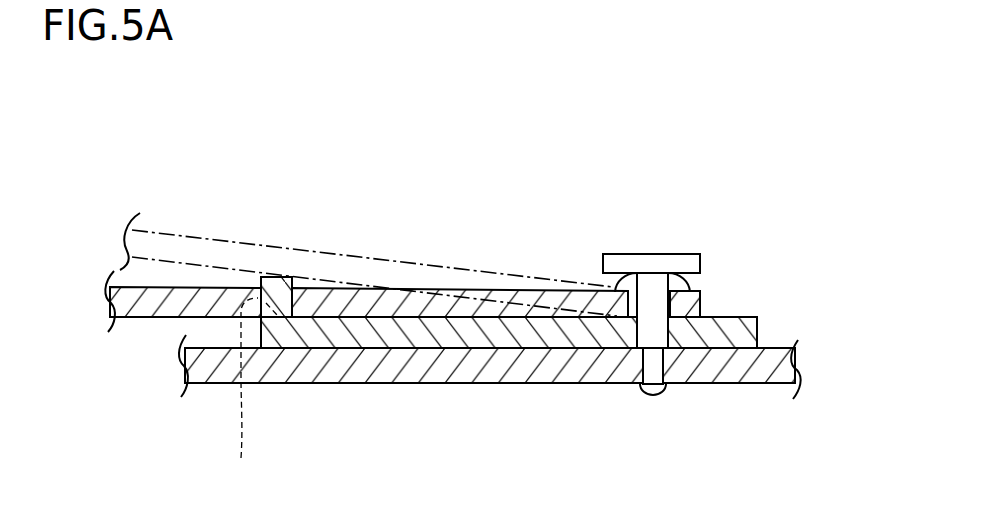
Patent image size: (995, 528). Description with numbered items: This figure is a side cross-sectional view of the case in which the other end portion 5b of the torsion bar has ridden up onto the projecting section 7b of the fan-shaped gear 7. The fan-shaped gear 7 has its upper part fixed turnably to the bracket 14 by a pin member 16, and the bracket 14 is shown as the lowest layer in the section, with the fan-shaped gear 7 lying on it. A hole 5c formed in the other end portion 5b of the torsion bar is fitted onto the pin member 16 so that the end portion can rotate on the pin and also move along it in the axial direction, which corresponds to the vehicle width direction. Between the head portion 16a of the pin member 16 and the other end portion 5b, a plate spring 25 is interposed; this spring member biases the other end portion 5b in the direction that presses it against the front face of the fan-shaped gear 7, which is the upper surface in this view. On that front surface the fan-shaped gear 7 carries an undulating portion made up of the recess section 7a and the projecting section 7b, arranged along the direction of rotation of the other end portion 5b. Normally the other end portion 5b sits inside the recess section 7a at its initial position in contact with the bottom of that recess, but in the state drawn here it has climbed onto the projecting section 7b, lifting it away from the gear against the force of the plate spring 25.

The other end portion 5b is at (402, 288).
The hole 5c is at (633, 305).
The fan-shaped gear 7 is at (507, 325).
The recess section 7a is at (241, 392).
The projecting section 7b is at (272, 277).
The bracket 14 is at (781, 367).
The pin member 16 is at (639, 277).
The head portion 16a is at (613, 263).
The plate spring 25 is at (690, 286).